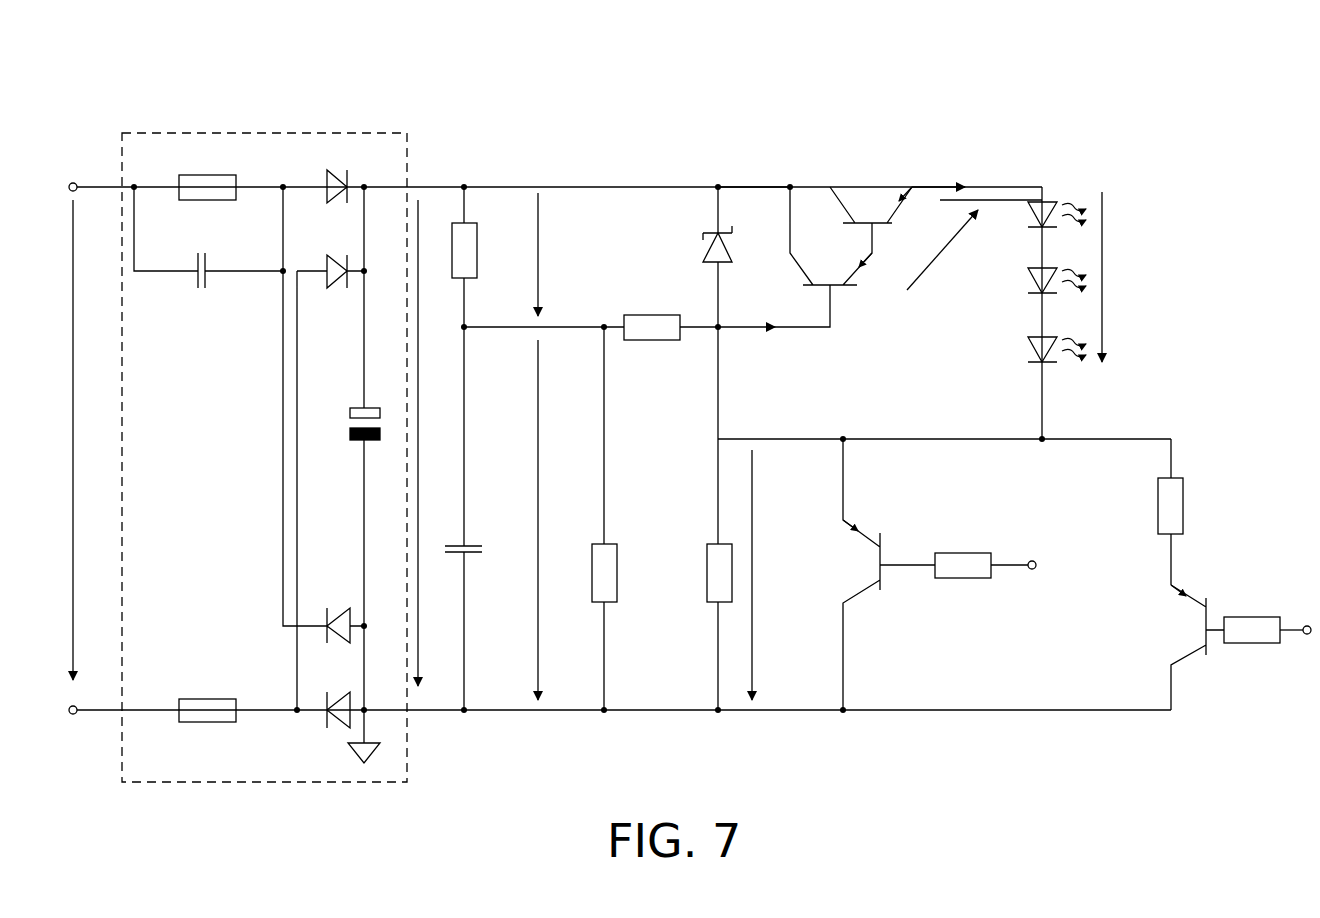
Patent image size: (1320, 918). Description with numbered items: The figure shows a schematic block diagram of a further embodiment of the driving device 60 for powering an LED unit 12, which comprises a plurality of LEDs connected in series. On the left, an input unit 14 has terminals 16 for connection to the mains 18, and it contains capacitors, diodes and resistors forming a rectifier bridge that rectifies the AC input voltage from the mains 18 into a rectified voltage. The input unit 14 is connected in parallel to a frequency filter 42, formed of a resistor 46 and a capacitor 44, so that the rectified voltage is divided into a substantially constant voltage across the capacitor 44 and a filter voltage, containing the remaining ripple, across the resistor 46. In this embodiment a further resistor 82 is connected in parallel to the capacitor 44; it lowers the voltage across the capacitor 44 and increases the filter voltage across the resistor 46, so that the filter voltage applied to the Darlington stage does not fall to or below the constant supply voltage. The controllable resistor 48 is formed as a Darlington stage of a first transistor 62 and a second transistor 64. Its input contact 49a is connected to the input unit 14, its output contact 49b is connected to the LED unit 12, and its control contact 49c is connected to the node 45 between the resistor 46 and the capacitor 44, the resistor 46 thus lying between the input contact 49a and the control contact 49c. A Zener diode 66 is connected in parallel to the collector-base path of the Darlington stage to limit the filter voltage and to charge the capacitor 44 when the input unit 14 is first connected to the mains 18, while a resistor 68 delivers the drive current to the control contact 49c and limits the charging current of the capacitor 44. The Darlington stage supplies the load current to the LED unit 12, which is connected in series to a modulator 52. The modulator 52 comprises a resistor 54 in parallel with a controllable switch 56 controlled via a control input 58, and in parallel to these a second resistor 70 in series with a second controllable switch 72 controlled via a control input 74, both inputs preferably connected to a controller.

The terminals 16 is at (77, 182).
The mains 18 is at (30, 432).
The input unit 14 is at (192, 796).
The frequency filter 42 is at (549, 158).
The resistor 46 is at (478, 254).
The node 45 is at (466, 332).
The capacitor 44 is at (474, 545).
The further resistor 82 is at (618, 555).
The resistor 68 is at (648, 314).
The Zener diode 66 is at (703, 250).
The resistor 54 is at (707, 575).
The input contact 49a is at (757, 186).
The controllable resistor 48 is at (830, 186).
The output contact 49b is at (927, 186).
The control contact 49c is at (823, 335).
The first transistor 62 is at (850, 288).
The second transistor 64 is at (905, 210).
The driving device 60 is at (1027, 122).
The LED unit 12 is at (1112, 270).
The modulator 52 is at (876, 794).
The controllable switch 56 is at (878, 565).
The control input 58 is at (1033, 558).
The second resistor 70 is at (1180, 500).
The second controllable switch 72 is at (1210, 603).
The control input 74 is at (1307, 622).